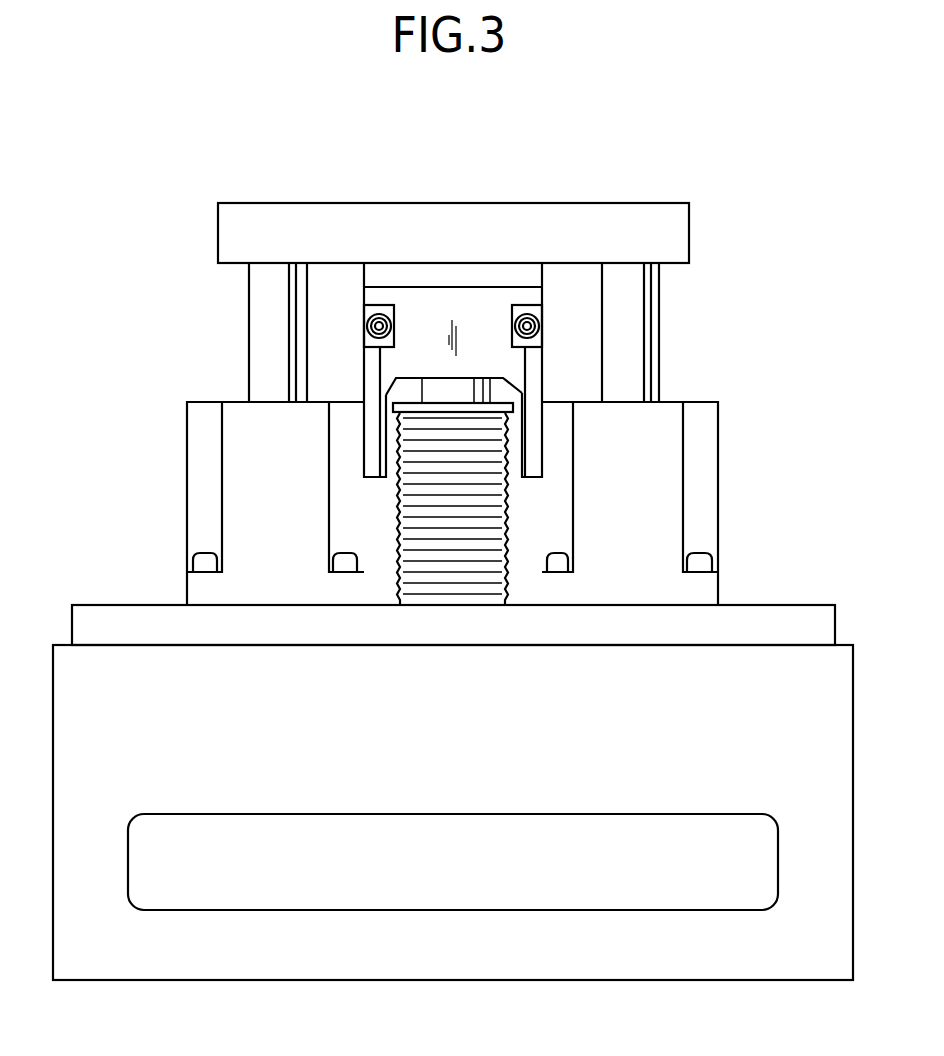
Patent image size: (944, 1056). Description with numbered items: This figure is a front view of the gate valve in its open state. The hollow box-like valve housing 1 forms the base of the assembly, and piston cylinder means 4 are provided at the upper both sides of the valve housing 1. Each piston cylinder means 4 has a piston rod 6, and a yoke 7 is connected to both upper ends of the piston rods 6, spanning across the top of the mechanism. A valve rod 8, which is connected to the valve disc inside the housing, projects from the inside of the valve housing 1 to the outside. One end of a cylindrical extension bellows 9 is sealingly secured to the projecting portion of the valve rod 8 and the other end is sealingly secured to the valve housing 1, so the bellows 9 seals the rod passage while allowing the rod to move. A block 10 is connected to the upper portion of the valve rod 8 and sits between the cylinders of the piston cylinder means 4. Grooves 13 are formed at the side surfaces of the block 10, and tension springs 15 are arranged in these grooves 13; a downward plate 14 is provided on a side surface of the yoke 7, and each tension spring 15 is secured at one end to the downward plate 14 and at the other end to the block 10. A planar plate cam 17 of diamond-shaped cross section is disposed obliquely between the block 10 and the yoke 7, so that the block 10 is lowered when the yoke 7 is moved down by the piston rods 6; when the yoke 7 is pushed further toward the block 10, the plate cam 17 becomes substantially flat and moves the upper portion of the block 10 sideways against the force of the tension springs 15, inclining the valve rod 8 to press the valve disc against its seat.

The valve housing 1 is at (808, 607).
The piston cylinder means 4 is at (670, 442).
The piston rod 6 is at (658, 343).
The yoke 7 is at (637, 212).
The valve rod 8 is at (477, 395).
The extension bellows 9 is at (487, 511).
The block 10 is at (477, 315).
The grooves 13 is at (541, 312).
The downward plate 14 is at (365, 303).
The tension spring 15 is at (526, 312).
The planar plate cam 17 is at (418, 273).